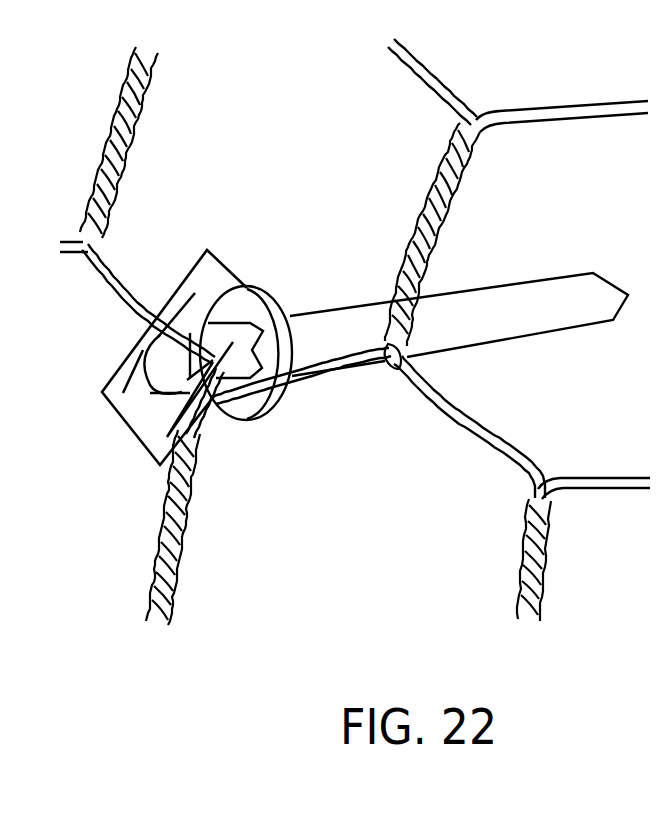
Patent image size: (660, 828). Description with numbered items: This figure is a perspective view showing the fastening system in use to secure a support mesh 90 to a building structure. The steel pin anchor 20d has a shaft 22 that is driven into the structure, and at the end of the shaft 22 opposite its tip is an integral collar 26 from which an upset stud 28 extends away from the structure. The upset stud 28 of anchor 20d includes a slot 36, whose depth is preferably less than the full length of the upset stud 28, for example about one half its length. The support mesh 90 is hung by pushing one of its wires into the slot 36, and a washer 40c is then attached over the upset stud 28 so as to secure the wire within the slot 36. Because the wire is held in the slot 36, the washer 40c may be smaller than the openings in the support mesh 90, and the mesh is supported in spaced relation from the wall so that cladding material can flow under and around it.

The steel pin anchor 20d is at (383, 313).
The shaft 22 is at (538, 330).
The collar 26 is at (277, 352).
The upset stud 28 is at (213, 410).
The slot 36 is at (150, 343).
The washer 40c is at (117, 382).
The support mesh 90 is at (135, 306).